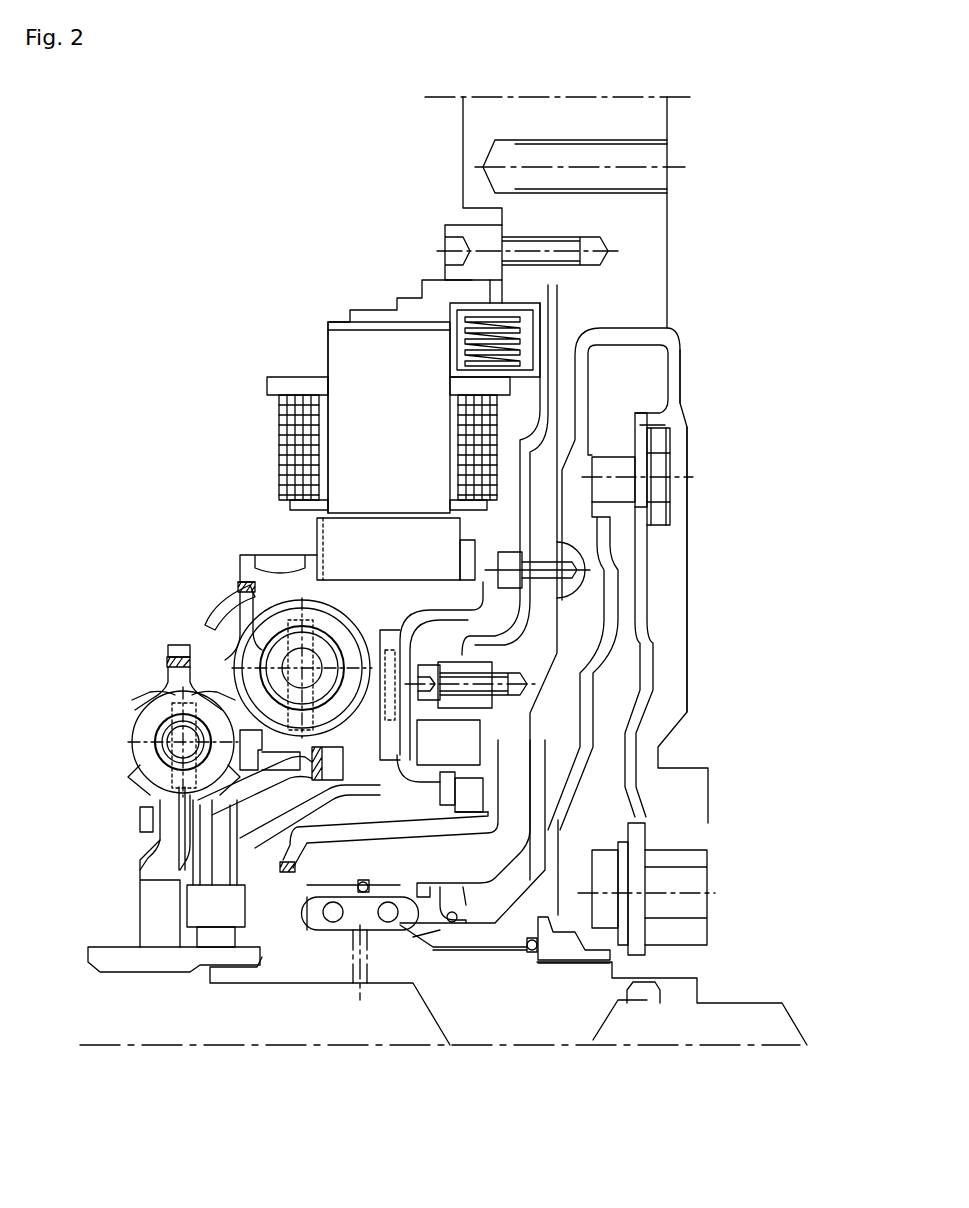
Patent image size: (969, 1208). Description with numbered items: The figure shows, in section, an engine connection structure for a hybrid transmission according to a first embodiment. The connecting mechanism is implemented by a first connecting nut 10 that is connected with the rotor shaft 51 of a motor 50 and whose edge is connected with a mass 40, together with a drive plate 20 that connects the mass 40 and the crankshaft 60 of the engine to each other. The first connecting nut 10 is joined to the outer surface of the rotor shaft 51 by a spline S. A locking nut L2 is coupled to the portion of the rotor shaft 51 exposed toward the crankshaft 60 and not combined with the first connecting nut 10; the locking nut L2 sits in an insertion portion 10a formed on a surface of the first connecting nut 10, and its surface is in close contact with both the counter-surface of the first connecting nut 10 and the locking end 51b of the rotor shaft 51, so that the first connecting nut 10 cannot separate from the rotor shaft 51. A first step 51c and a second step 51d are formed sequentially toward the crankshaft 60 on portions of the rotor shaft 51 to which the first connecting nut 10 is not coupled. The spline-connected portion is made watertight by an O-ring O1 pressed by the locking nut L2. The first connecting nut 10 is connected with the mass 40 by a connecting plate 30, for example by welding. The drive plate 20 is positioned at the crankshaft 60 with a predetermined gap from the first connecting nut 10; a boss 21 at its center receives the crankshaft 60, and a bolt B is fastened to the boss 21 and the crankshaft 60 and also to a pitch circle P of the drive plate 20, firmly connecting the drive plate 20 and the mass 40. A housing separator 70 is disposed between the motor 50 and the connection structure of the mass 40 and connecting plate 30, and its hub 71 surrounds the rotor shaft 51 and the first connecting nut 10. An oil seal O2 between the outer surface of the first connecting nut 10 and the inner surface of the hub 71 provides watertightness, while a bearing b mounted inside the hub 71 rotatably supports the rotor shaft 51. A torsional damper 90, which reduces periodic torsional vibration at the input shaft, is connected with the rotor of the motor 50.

The motor 50 is at (320, 352).
The mass 40 is at (645, 372).
The bolt B is at (657, 445).
The pitch circle P is at (680, 477).
The housing separator 70 is at (545, 495).
The connecting plate 30 is at (628, 620).
The drive plate 20 is at (650, 675).
The torsional damper 90 is at (150, 678).
The hub 71 is at (345, 778).
The insertion portion 10a is at (553, 913).
The O-ring O1 is at (557, 960).
The boss 21 is at (648, 933).
The crankshaft 60 is at (660, 963).
The bearing b is at (317, 930).
The oil seal O2 is at (435, 935).
The first connecting nut 10 is at (417, 940).
The spline S is at (460, 940).
The rotor shaft 51 is at (462, 1013).
The locking end 51b is at (543, 963).
The locking nut L2 is at (548, 963).
The first step 51c is at (582, 963).
The second step 51d is at (643, 983).